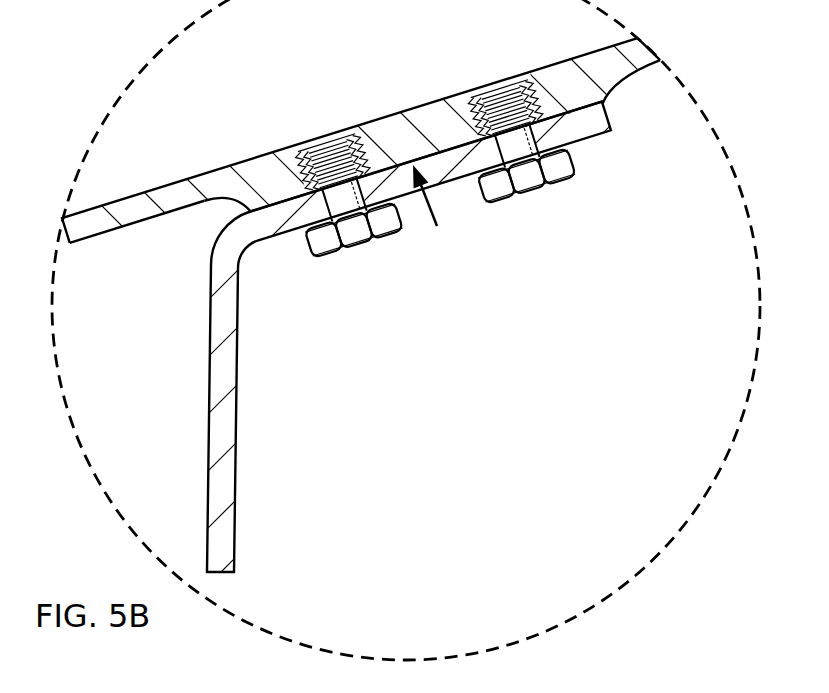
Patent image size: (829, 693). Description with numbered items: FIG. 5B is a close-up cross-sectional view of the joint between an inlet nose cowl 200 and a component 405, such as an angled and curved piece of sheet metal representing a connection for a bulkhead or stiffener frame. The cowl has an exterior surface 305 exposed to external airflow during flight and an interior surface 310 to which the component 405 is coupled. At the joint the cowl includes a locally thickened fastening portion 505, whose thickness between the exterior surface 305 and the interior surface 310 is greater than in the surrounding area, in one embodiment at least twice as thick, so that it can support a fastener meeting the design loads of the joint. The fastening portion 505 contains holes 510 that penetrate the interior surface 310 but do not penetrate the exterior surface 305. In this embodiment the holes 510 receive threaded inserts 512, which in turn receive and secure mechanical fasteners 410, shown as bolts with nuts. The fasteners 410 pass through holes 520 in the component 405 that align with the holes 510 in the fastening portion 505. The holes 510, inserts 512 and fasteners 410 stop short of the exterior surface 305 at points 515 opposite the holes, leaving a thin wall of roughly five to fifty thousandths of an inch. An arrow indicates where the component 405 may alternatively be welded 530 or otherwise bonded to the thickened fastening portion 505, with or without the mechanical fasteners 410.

The inlet nose cowl 200 is at (624, 84).
The exterior surface 305 is at (170, 184).
The interior surface 310 is at (149, 222).
The component 405 is at (210, 440).
The mechanical fasteners 410 is at (362, 248).
The locally thickened fastening portion 505 is at (254, 168).
The holes 510 is at (322, 143).
The threaded inserts 512 is at (363, 130).
The points opposite of the holes 515 is at (301, 150).
The holes in the component 520 is at (303, 228).
The welded 530 is at (436, 210).